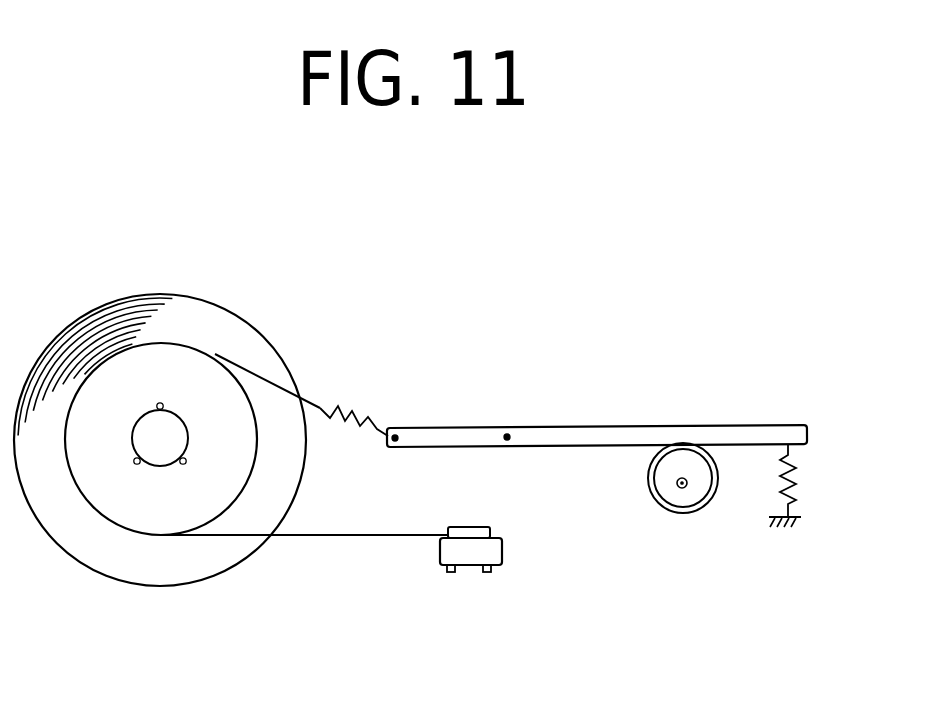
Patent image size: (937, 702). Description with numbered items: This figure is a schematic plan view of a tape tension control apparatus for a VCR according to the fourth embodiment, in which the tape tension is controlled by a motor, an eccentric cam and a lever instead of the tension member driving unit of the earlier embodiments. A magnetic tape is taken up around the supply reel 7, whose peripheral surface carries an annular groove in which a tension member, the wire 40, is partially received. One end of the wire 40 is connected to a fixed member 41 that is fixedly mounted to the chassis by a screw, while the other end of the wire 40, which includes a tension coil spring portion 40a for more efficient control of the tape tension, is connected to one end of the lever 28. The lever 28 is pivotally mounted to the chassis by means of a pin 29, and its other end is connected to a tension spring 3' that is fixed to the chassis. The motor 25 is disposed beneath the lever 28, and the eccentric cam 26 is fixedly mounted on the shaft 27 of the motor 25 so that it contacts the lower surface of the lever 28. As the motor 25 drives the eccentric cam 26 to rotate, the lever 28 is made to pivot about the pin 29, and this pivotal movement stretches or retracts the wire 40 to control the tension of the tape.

The supply reel 7 is at (137, 513).
The wire 40 is at (296, 394).
The tension coil spring portion 40a is at (348, 410).
The lever 28 is at (607, 437).
The pin 29 is at (508, 435).
The motor 25 is at (702, 500).
The eccentric cam 26 is at (672, 510).
The shaft 27 is at (678, 485).
The tension spring 3' is at (818, 480).
The fixed member 41 is at (452, 550).